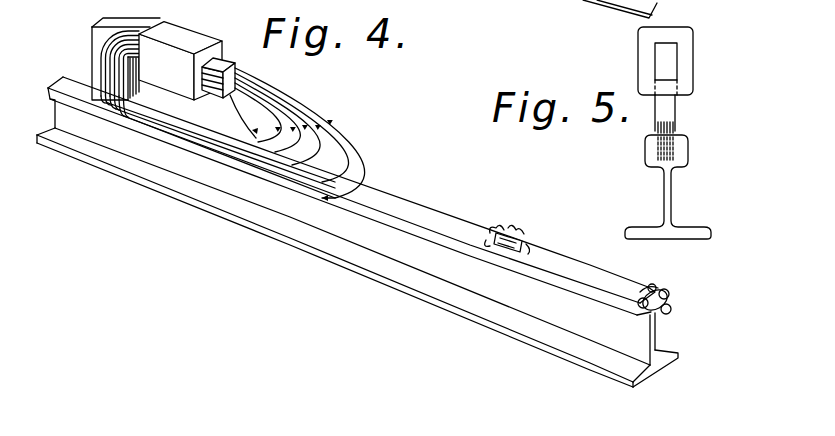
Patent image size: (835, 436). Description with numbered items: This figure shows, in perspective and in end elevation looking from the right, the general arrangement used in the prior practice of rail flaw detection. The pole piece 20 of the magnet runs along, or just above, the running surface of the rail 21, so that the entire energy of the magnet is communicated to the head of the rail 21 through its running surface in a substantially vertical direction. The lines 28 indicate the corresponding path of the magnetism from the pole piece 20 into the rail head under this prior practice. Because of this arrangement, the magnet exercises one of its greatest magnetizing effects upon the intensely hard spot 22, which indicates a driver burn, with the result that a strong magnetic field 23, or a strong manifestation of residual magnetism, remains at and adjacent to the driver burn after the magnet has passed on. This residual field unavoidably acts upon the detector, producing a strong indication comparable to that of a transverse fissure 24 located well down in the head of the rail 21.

In FIG. 4, the pole piece 20 is at (100, 58).
In FIG. 5, the pole piece 20 is at (670, 105).
In FIG. 4, the rail 21 is at (412, 208).
In FIG. 5, the rail 21 is at (688, 151).
In FIG. 4, the intensely hard spot 22 is at (520, 237).
In FIG. 4, the strong magnetic field 23 is at (502, 231).
In FIG. 4, the transverse fissure 24 is at (670, 302).
In FIG. 5, the lines indicating the path of the magnetism 28 is at (678, 135).